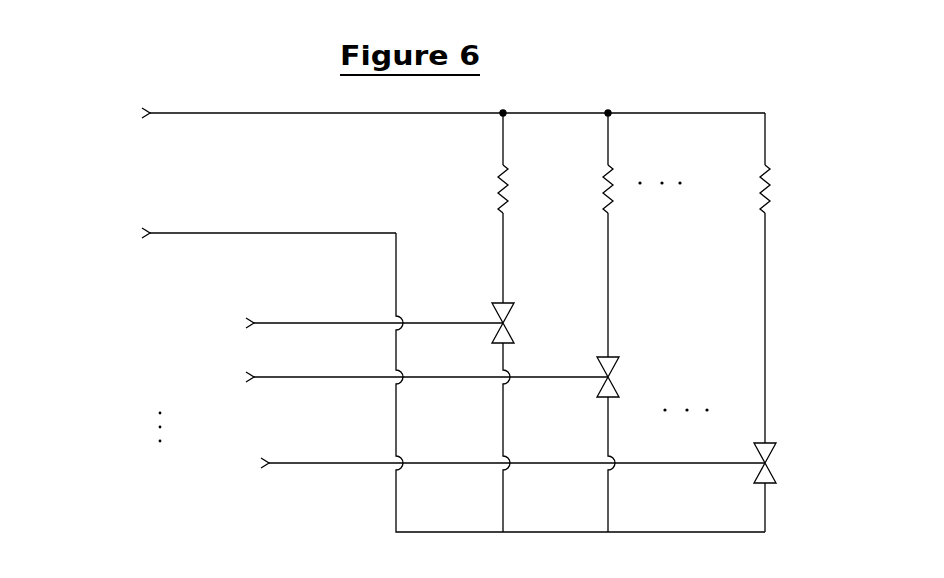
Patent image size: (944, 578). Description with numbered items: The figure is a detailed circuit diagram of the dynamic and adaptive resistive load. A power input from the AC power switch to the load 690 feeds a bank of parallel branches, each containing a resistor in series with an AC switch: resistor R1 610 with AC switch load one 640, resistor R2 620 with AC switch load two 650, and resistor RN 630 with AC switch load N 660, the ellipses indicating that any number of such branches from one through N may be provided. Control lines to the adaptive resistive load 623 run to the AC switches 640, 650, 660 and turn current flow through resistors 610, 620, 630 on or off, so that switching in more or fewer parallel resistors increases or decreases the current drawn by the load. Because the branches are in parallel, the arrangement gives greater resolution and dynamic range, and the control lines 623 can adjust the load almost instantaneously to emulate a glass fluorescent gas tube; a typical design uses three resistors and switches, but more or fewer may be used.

The power input from AC power switch to load 690 is at (415, 173).
The Resistor 1 610 is at (470, 208).
The Resistor 2 620 is at (578, 235).
The Resistor N 630 is at (737, 278).
The AC switch load 1 640 is at (539, 416).
The AC switch load 2 650 is at (648, 444).
The AC switch load N 660 is at (800, 487).
The Control Lines to Adaptive Resistive Load 623 is at (391, 394).